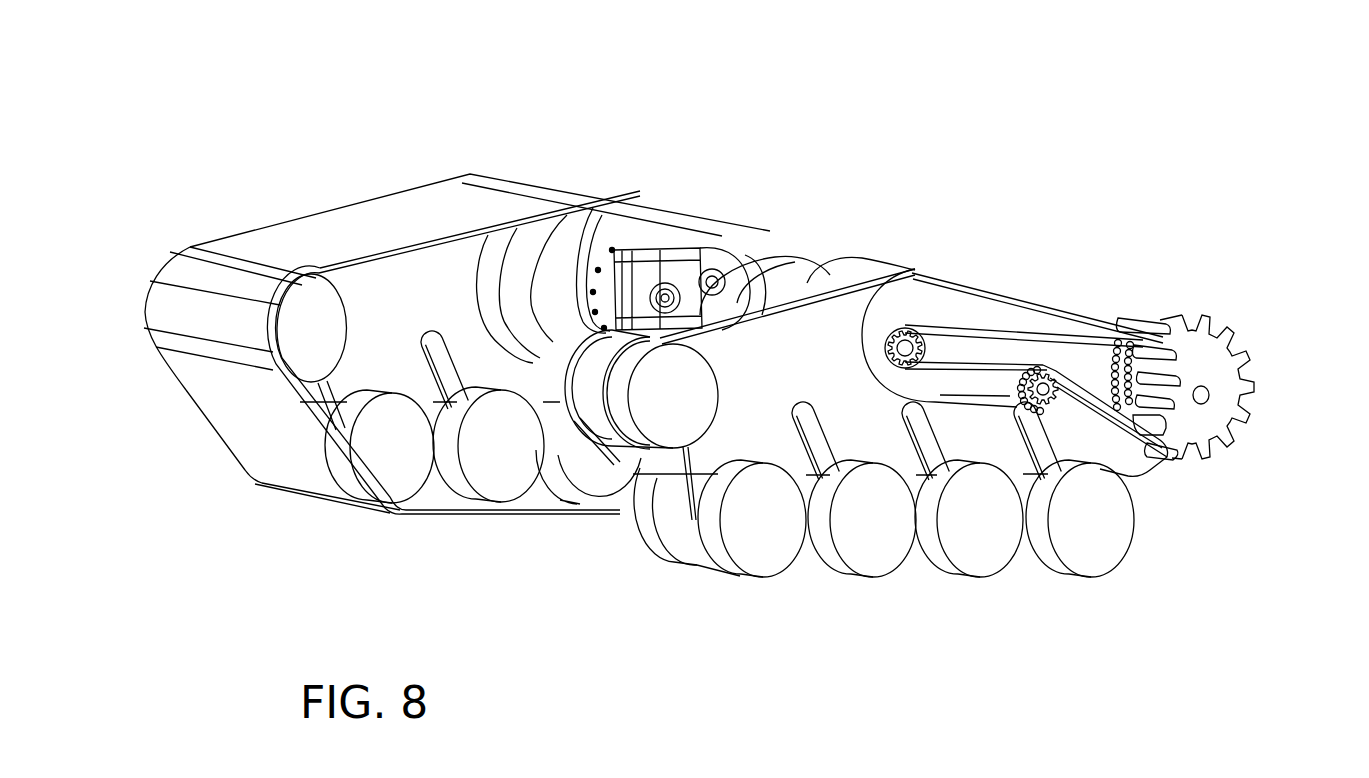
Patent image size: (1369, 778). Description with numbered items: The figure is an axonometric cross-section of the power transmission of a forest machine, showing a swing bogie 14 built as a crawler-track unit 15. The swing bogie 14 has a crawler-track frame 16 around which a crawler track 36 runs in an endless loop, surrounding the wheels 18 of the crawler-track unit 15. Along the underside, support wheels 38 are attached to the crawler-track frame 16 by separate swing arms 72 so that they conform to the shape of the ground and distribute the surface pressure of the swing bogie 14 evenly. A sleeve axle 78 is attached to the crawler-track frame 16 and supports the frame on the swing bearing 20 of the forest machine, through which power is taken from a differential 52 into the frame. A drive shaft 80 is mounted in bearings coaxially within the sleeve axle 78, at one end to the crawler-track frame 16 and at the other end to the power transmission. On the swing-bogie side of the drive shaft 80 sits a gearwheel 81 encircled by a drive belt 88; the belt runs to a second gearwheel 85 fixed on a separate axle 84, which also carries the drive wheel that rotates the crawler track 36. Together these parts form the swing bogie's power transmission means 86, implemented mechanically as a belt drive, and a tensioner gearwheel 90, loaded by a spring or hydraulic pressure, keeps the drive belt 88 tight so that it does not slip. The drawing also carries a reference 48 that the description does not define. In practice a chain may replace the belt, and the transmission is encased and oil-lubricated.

The swing bogie 14 is at (473, 150).
The crawler-track unit 15 is at (463, 520).
The crawler-track frame 16 is at (356, 325).
The wheels 18 is at (295, 343).
The swing bearing 20 is at (862, 240).
The crawler track 36 is at (368, 237).
The support wheels 38 is at (374, 463).
The drive sprocket teeth 48 is at (1153, 330).
The differential 52 is at (715, 245).
The swing arms 72 is at (337, 375).
The sleeve axle 78 is at (587, 233).
The drive shaft 80 is at (906, 312).
The gearwheel 81 is at (930, 333).
The axle 84 is at (1207, 400).
The gearwheel 85 is at (1183, 387).
The power transmission means 86 is at (1090, 275).
The drive belt 88 is at (1012, 328).
The tensioner gearwheel 90 is at (1036, 378).